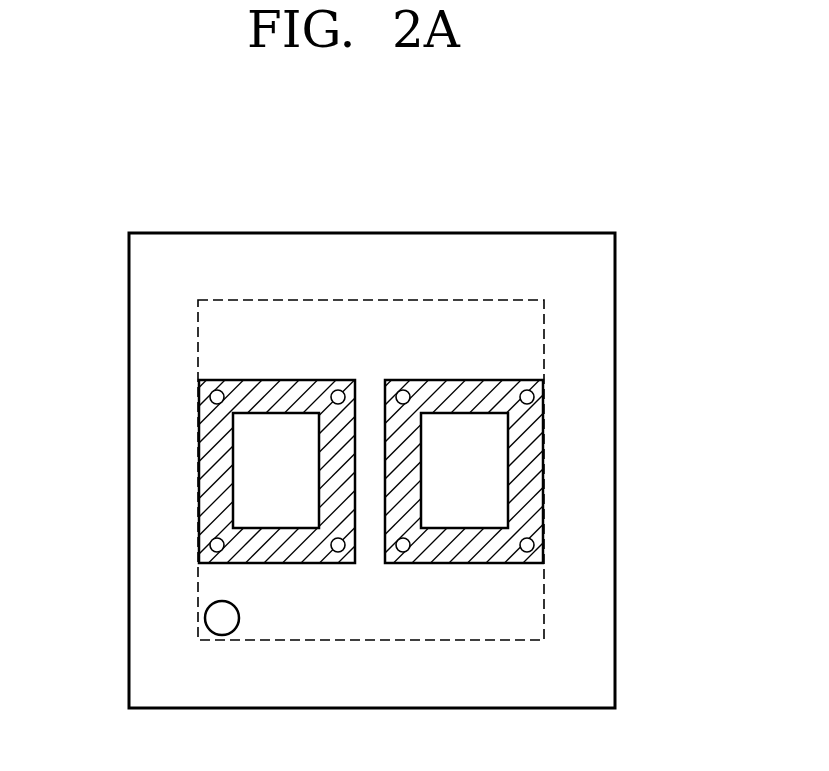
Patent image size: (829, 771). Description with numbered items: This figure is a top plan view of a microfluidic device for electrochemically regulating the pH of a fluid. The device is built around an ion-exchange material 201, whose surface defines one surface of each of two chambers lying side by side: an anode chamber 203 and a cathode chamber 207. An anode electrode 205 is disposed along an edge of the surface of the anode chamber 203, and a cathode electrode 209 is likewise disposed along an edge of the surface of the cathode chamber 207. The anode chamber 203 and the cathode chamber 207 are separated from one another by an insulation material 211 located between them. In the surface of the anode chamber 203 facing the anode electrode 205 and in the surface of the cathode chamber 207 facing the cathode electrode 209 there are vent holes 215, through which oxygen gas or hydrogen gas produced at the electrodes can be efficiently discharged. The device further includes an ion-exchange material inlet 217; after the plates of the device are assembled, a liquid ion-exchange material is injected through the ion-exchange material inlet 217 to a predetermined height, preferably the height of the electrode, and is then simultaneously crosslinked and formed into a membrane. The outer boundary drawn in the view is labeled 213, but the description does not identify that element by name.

The ion-exchange material 201 is at (517, 607).
The anode chamber 203 is at (253, 428).
The anode electrode 205 is at (306, 412).
The cathode chamber 207 is at (494, 430).
The cathode electrode 209 is at (439, 403).
The insulation material 211 is at (370, 425).
The chip body 213 is at (602, 296).
The vent holes 215 is at (535, 397).
The ion-exchange material inlet 217 is at (210, 618).